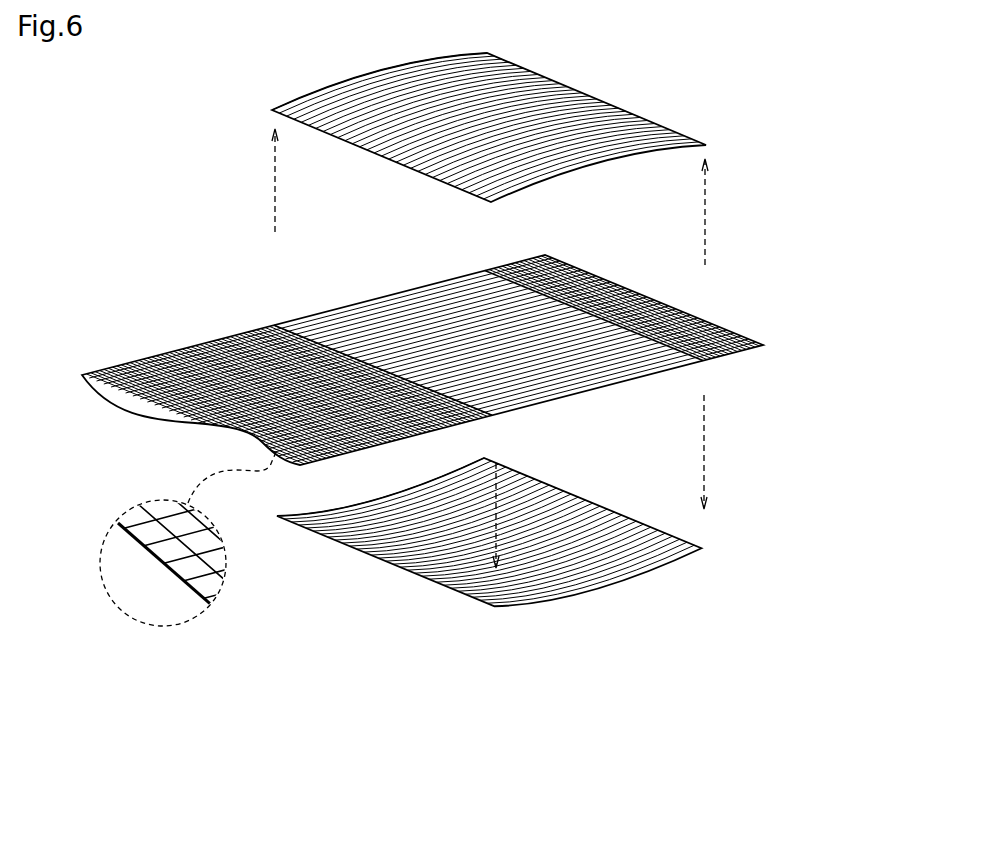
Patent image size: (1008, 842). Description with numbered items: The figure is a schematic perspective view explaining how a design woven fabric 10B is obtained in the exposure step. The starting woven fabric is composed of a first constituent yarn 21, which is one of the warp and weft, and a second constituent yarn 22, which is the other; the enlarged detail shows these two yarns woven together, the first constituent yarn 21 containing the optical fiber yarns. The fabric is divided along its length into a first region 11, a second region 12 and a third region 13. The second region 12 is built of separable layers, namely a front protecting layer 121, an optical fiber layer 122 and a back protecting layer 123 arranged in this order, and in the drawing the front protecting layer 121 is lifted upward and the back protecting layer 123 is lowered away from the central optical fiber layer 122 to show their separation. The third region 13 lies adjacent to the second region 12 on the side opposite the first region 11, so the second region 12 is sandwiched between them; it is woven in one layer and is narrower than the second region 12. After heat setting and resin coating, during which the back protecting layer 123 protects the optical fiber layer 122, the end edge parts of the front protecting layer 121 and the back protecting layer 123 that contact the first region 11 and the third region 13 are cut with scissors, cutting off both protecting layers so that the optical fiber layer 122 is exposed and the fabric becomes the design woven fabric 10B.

The design woven fabric 10B is at (204, 265).
The first region 11 is at (270, 326).
The second region 12 is at (482, 268).
The third region 13 is at (542, 253).
The front protecting layer 121 is at (545, 180).
The optical fiber layer 122 is at (420, 338).
The back protecting layer 123 is at (560, 603).
The first constituent yarn 21 is at (228, 566).
The second constituent yarn 22 is at (132, 508).